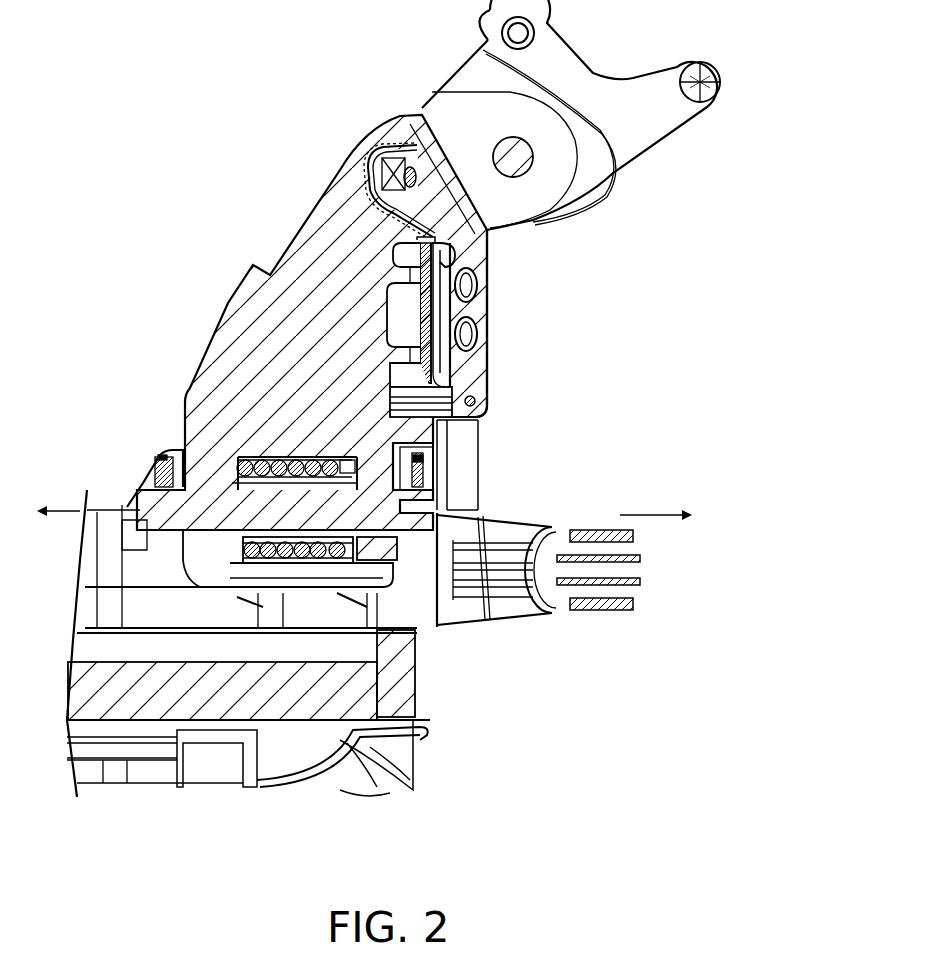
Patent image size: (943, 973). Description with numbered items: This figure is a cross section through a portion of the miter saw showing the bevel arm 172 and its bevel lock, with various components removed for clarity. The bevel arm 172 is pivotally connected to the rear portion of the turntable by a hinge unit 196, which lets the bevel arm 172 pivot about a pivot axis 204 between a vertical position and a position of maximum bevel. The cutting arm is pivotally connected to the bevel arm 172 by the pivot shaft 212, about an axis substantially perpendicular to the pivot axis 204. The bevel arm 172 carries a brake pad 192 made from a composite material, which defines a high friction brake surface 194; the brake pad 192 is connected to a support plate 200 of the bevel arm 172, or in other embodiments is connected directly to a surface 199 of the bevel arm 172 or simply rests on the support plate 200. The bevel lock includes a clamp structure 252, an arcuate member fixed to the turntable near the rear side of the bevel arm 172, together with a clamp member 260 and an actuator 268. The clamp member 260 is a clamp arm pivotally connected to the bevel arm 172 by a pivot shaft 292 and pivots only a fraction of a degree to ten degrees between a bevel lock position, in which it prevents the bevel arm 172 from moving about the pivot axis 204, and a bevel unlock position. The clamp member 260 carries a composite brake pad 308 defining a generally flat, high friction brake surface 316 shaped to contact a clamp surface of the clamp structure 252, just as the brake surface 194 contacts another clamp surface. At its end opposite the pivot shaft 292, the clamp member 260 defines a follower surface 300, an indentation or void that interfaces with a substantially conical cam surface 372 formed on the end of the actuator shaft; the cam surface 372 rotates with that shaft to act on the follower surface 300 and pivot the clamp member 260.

The bevel arm 172 is at (223, 350).
The brake pad 192 is at (420, 297).
The brake surface 194 is at (420, 340).
The hinge unit 196 is at (131, 468).
The surface 199 is at (420, 362).
The support plate 200 is at (393, 263).
The pivot axis 204 is at (647, 515).
The pivot shaft 212 is at (500, 143).
The clamp structure 252 is at (443, 437).
The clamp member 260 is at (490, 243).
The actuator 268 is at (382, 165).
The pivot shaft 292 is at (480, 395).
The follower surface 300 is at (383, 178).
The brake pad 308 is at (487, 270).
The brake surface 316 is at (431, 310).
The cam surface 372 is at (411, 172).